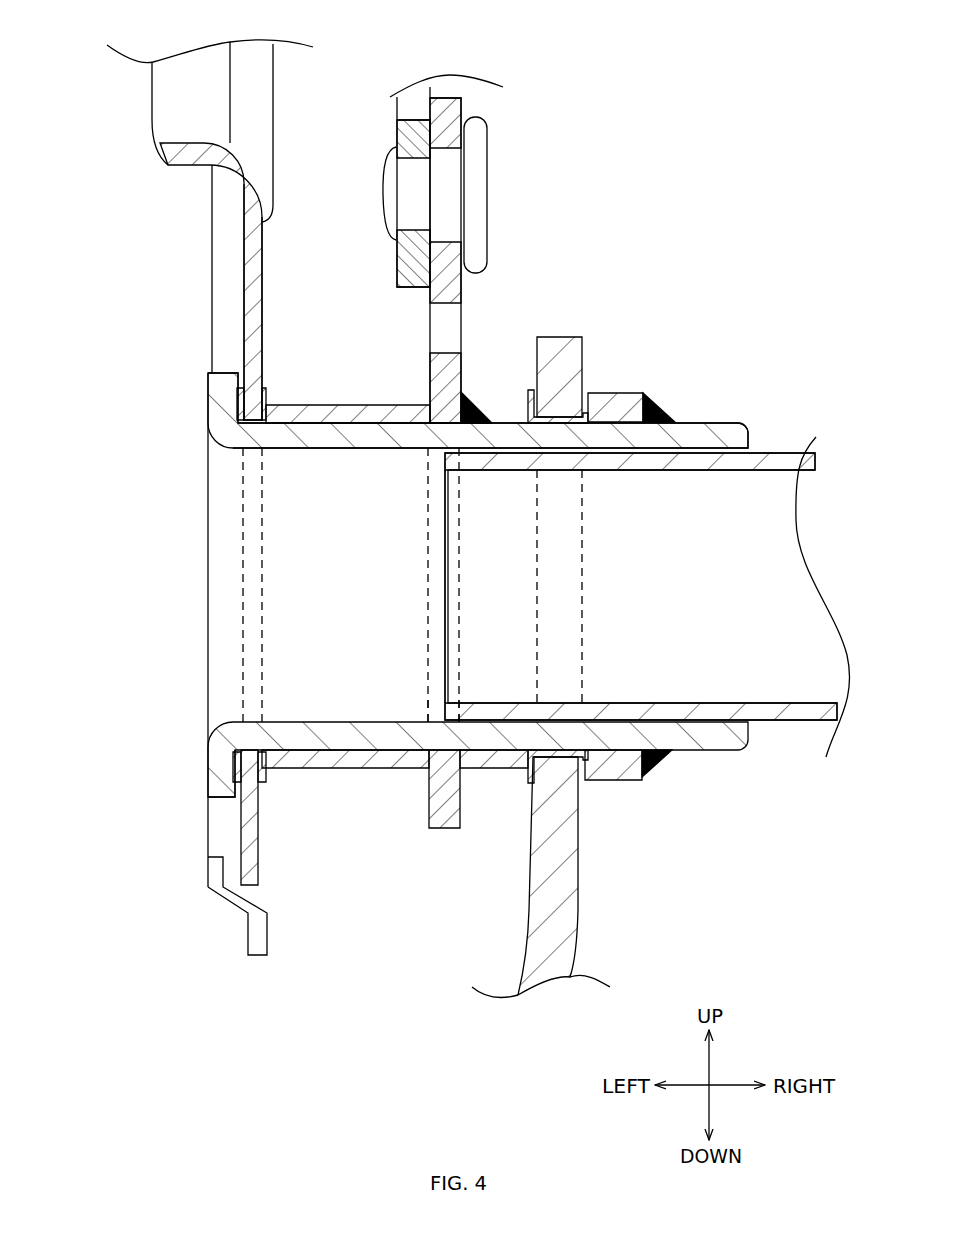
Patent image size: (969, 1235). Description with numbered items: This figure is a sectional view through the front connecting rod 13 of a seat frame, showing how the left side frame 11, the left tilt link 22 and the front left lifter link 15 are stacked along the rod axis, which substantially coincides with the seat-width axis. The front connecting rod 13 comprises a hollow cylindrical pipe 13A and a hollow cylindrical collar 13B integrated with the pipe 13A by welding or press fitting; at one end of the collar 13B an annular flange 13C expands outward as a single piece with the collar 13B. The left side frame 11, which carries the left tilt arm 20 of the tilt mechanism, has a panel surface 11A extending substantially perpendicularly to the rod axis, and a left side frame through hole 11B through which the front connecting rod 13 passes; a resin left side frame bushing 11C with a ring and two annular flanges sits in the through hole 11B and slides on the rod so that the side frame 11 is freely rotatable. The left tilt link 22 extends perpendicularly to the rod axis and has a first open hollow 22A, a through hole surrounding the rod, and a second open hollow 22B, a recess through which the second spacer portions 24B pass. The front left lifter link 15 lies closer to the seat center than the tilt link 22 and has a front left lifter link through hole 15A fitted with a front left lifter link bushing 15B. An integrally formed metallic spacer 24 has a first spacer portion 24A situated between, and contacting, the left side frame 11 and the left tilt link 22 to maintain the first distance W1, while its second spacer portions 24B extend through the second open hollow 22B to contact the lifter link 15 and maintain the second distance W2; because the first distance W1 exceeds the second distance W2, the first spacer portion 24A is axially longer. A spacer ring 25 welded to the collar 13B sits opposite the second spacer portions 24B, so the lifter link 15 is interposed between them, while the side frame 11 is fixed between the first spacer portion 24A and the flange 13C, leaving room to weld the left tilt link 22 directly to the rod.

The left side frame 11 is at (211, 233).
The panel surface 11A is at (243, 316).
The left side frame through hole 11B is at (242, 628).
The left side frame bushing 11C is at (268, 400).
The front connecting rod 13 is at (826, 306).
The pipe 13A is at (797, 450).
The collar 13B is at (719, 422).
The flange 13C is at (208, 392).
The front left lifter link 15 is at (583, 346).
The front left lifter link through hole 15A is at (580, 595).
The front left lifter link bushing 15B is at (529, 392).
The left tilt arm 20 is at (397, 122).
The left tilt link 22 is at (466, 108).
The first open hollow 22A is at (428, 503).
The second open hollow 22B is at (440, 737).
The spacer 24 is at (380, 402).
The first spacer portion 24A is at (423, 772).
The second spacer portion 24B is at (523, 774).
The spacer ring 25 is at (621, 391).
The first distance W1 is at (428, 368).
The second distance W2 is at (537, 320).